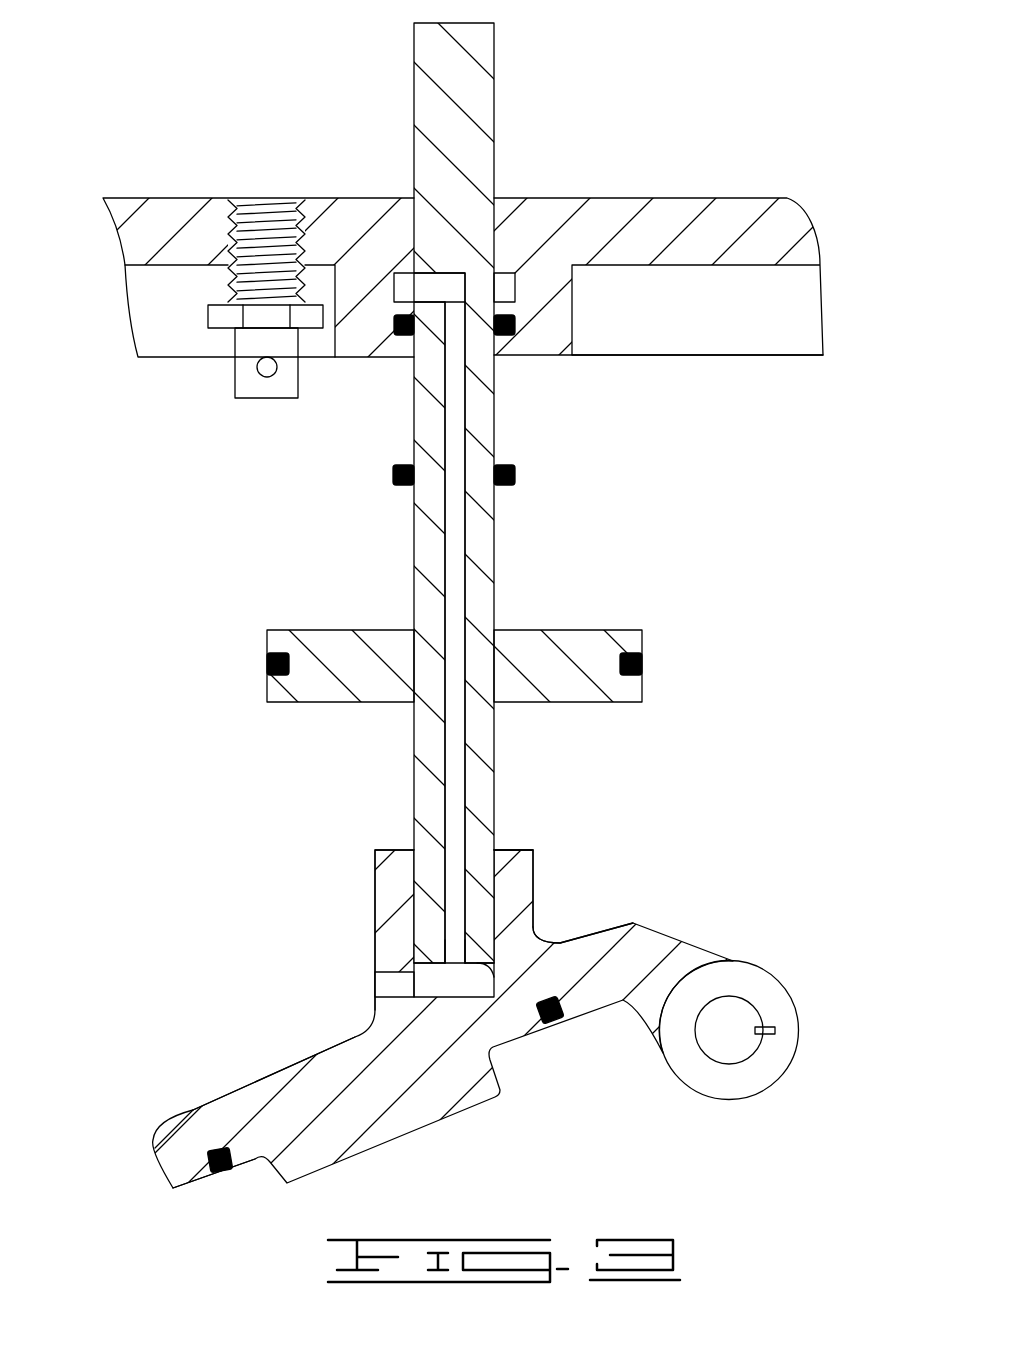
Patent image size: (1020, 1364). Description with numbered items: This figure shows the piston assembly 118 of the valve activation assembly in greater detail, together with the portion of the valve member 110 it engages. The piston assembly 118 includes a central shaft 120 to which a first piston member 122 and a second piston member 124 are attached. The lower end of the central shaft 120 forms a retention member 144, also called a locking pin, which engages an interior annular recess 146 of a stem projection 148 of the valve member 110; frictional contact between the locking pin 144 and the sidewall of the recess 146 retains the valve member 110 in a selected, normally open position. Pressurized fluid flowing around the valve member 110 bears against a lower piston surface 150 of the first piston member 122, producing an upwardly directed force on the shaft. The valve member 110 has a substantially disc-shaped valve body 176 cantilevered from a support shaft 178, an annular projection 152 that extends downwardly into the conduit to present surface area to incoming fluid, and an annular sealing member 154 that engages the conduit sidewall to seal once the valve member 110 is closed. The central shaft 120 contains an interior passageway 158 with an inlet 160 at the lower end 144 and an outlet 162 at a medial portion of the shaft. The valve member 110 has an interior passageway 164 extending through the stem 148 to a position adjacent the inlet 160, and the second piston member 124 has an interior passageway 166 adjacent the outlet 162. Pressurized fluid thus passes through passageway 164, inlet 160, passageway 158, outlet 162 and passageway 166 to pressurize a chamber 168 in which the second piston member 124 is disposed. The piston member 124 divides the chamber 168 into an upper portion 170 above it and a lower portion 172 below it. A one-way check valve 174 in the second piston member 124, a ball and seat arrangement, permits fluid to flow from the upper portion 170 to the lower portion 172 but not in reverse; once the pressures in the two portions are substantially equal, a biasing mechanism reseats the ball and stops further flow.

The valve member 110 is at (257, 1067).
The piston assembly 118 is at (642, 96).
The central shaft 120 is at (430, 90).
The first piston member 122 is at (345, 635).
The second piston member 124 is at (210, 217).
The retention member 144 is at (560, 943).
The annular recess 146 is at (505, 862).
The stem projection 148 is at (385, 858).
The lower piston surface 150 is at (337, 702).
The annular projection 152 is at (218, 1175).
The annular sealing member 154 is at (553, 1022).
The interior passageway 158 is at (462, 462).
The inlet 160 is at (465, 945).
The outlet 162 is at (448, 280).
The interior passageway 164 is at (417, 972).
The interior passageway 166 is at (405, 270).
The chamber 168 is at (735, 147).
The upper portion 170 is at (237, 118).
The lower portion 172 is at (338, 428).
The one-way check valve 174 is at (210, 303).
The valve body 176 is at (455, 1087).
The support shaft 178 is at (730, 1020).